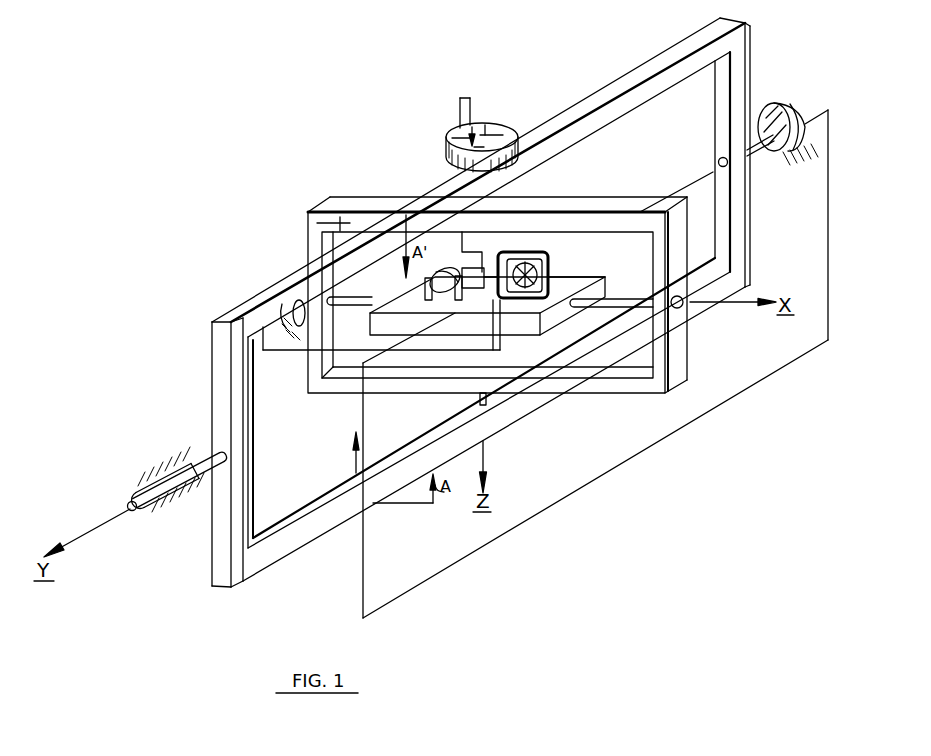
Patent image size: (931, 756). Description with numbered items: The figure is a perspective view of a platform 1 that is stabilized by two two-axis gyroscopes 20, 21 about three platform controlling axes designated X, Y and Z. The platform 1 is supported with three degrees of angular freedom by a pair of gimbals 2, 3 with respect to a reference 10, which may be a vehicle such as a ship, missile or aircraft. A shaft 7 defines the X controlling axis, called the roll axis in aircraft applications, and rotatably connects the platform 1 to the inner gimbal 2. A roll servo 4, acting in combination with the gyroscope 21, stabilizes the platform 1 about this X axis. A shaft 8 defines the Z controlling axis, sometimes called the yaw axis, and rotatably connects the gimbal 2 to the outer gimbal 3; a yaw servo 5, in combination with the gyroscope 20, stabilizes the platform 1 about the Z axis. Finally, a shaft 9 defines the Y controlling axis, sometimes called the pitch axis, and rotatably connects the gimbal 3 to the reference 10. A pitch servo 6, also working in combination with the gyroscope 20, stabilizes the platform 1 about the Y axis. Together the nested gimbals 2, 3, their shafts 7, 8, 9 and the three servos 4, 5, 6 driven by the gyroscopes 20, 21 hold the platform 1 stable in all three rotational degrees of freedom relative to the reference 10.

The platform 1 is at (575, 283).
The gimbal 2 is at (682, 386).
The gimbal 3 is at (650, 78).
The roll servo 4 is at (290, 336).
The yaw servo 5 is at (486, 124).
The pitch servo 6 is at (797, 102).
The shaft 7 is at (589, 308).
The shaft 8 is at (487, 398).
The shaft 9 is at (202, 462).
The reference 10 is at (163, 513).
The two-axis gyroscope 20 is at (461, 271).
The two-axis gyroscope 21 is at (523, 244).